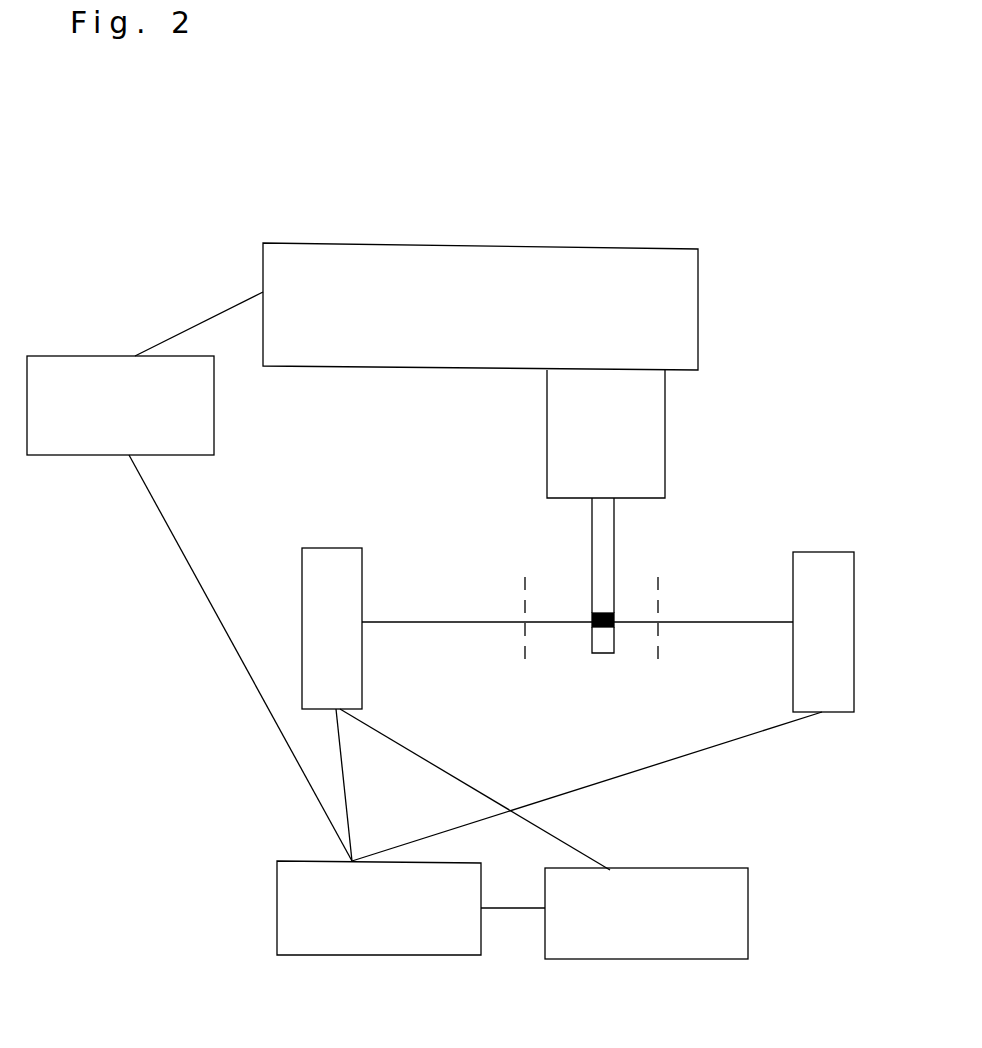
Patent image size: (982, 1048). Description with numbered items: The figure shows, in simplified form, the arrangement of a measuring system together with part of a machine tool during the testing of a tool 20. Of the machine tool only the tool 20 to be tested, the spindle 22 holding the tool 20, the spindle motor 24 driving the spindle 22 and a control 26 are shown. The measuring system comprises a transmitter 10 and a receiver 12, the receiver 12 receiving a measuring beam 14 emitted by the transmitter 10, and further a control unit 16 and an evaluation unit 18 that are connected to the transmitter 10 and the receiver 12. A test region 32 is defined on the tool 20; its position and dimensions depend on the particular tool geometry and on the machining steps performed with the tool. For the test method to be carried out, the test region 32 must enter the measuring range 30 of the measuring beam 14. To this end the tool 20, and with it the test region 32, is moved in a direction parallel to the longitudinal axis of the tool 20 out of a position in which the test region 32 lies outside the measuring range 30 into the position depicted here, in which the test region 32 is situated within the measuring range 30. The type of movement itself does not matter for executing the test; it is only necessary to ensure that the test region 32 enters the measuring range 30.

The transmitter 10 is at (828, 552).
The receiver 12 is at (328, 548).
The measuring beam 14 is at (692, 626).
The control unit 16 is at (380, 958).
The evaluation unit 18 is at (640, 962).
The tool 20 is at (614, 550).
The spindle 22 is at (665, 442).
The spindle motor 24 is at (698, 345).
The control 26 is at (214, 418).
The measuring range 30 is at (590, 655).
The test region 32 is at (592, 616).